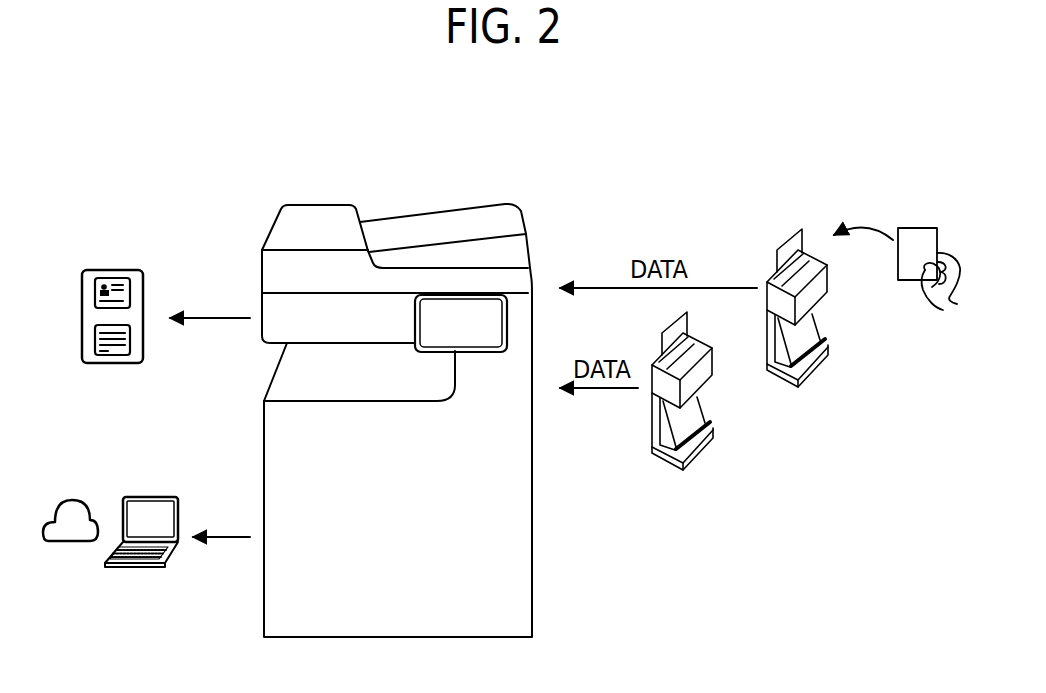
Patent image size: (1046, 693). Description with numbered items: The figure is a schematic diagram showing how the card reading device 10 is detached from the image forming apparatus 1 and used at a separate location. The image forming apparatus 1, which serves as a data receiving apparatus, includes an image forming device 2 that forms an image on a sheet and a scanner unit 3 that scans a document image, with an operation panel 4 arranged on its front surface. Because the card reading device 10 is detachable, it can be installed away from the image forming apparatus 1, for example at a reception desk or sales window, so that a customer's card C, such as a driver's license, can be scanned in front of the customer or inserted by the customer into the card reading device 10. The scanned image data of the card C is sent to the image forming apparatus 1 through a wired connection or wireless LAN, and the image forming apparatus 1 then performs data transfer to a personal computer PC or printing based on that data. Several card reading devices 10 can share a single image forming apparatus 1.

The image forming apparatus 1 is at (427, 163).
The image forming device 2 is at (532, 593).
The scanner unit 3 is at (303, 206).
The operation panel 4 is at (468, 308).
The card reading device 10 is at (712, 470).
The card C is at (688, 320).
The personal computer PC is at (112, 582).